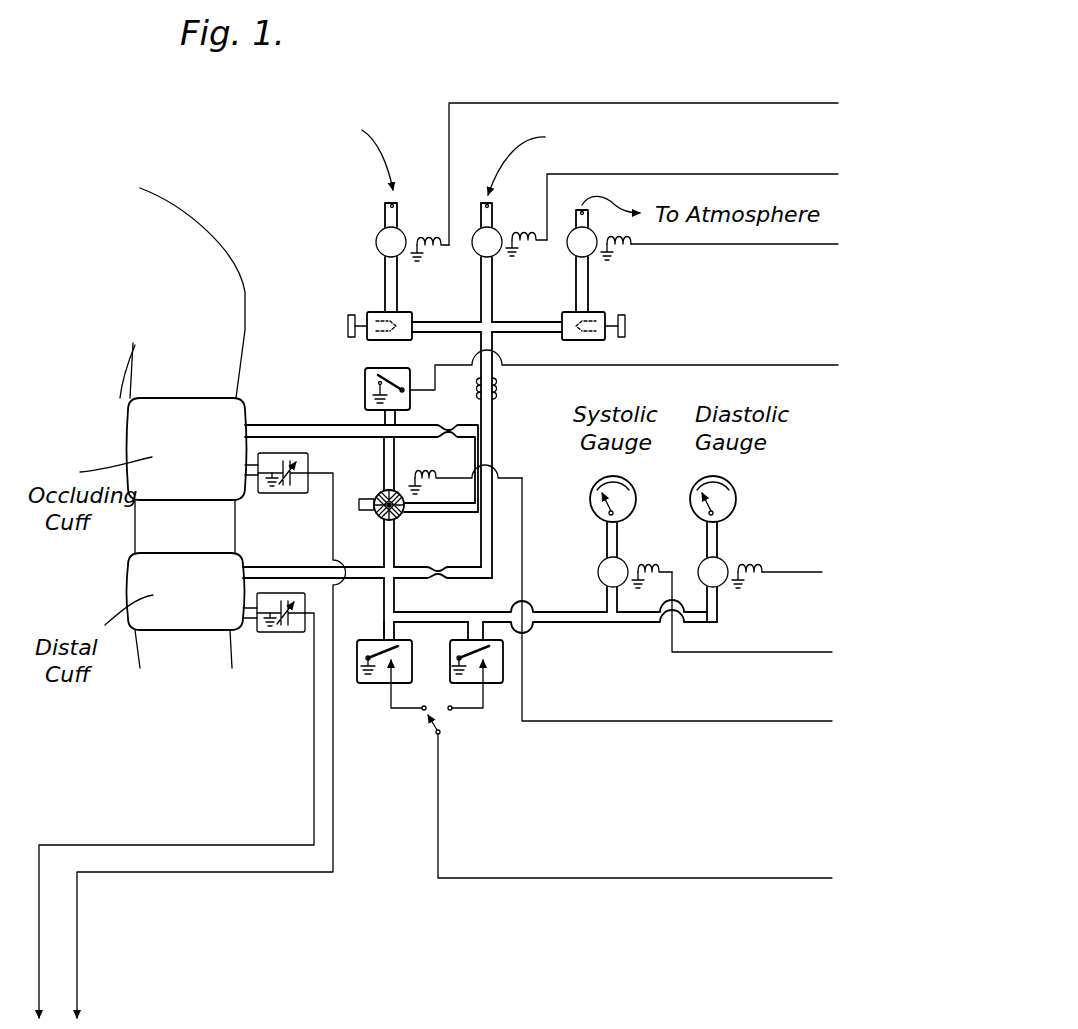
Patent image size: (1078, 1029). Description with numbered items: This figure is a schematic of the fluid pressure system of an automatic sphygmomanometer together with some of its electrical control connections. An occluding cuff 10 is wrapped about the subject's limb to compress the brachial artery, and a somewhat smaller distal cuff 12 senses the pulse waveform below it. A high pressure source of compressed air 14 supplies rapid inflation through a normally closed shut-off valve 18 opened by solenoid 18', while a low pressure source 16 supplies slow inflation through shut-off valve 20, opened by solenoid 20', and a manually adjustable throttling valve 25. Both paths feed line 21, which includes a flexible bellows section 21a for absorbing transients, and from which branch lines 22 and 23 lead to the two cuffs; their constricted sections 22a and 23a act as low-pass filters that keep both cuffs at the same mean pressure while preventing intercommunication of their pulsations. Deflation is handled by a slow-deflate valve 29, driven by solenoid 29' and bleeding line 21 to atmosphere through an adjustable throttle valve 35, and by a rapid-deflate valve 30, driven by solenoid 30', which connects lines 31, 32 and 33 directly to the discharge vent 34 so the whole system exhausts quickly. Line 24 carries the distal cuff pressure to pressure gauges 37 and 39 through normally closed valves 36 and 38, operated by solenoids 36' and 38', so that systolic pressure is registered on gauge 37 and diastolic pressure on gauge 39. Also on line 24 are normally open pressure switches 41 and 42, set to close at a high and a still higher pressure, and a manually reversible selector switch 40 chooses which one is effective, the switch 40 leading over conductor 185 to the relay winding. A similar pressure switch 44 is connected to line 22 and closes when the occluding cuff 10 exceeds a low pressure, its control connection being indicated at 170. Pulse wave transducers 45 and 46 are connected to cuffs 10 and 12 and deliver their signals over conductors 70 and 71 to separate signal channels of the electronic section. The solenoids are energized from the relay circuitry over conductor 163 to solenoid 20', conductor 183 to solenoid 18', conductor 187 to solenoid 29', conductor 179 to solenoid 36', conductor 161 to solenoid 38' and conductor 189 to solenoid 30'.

The occluding cuff 10 is at (187, 449).
The distal cuff 12 is at (186, 591).
The high pressure source of compressed air 14 is at (656, 181).
The low pressure source of compressed air 16 is at (229, 177).
The shut-off valve 18 is at (476, 274).
The solenoid 18' is at (526, 229).
The shut-off valve 20 is at (370, 269).
The solenoid 20' is at (430, 232).
The line 21 is at (493, 456).
The flexible bellows section 21a is at (497, 388).
The branch line 22 is at (304, 428).
The constricted section 22a is at (448, 428).
The branch line 23 is at (303, 568).
The constricted section 23a is at (432, 568).
The line 24 is at (438, 612).
The throttling valve 25 is at (374, 312).
The slow-deflate valve 29 is at (574, 269).
The solenoid 29' is at (636, 257).
The rapid-deflate valve 30 is at (377, 526).
The solenoid 30' is at (465, 470).
The line 31 is at (450, 513).
The line 32 is at (384, 452).
The line 33 is at (398, 521).
The discharge vent 34 is at (368, 499).
The adjustable throttle valve 35 is at (594, 338).
The valve 36 is at (597, 584).
The solenoid 36' is at (652, 562).
The pressure gauge 37 is at (590, 481).
The valve 38 is at (700, 581).
The solenoid 38' is at (758, 562).
The pressure gauge 39 is at (690, 500).
The selector switch 40 is at (432, 728).
The pressure switch 41 is at (380, 685).
The pressure switch 42 is at (498, 683).
The pressure switch 44 is at (365, 385).
The pulse wave transducer 45 is at (296, 494).
The pulse wave transducer 46 is at (296, 636).
The conductor 70 is at (78, 970).
The conductor 71 is at (54, 960).
The conductor 161 is at (800, 575).
The conductor 163 is at (746, 103).
The control line 170 is at (740, 362).
The conductor 179 is at (770, 654).
The conductor 183 is at (790, 177).
The conductor 185 is at (764, 878).
The conductor 187 is at (790, 248).
The conductor 189 is at (772, 722).